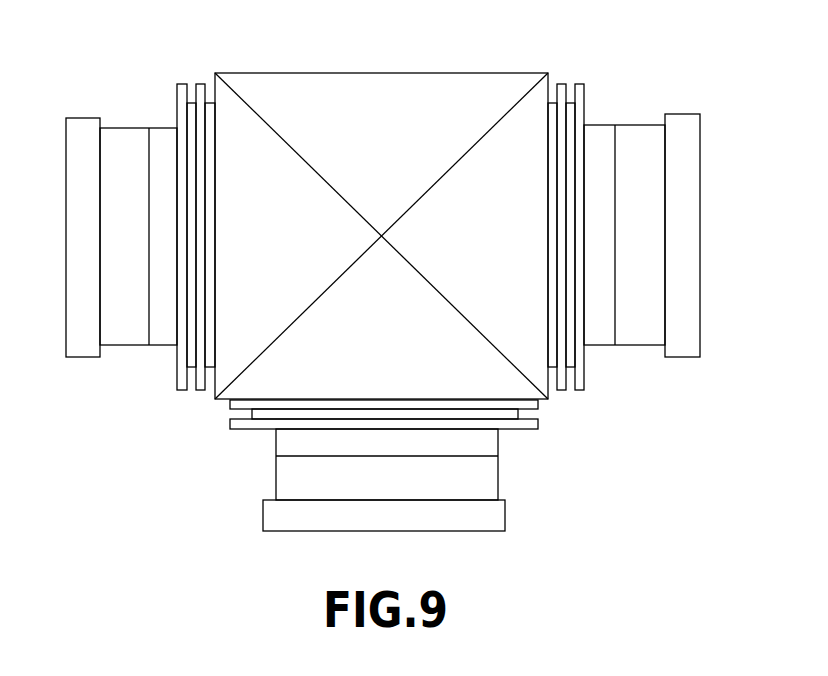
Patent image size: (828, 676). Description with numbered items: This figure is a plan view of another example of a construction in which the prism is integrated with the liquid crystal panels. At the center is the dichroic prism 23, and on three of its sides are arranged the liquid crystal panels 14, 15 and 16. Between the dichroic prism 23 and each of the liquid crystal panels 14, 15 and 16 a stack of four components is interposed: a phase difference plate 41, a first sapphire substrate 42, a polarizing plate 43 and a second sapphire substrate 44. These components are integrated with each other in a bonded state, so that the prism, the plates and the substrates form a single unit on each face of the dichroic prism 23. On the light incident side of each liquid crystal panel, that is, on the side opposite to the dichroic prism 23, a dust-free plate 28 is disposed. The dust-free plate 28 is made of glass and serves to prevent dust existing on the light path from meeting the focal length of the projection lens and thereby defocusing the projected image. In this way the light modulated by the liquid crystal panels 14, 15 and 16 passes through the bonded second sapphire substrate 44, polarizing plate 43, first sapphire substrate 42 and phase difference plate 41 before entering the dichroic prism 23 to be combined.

The dichroic prism 23 is at (407, 93).
The phase difference plate 41 is at (212, 121).
The first sapphire substrate 42 is at (200, 88).
The polarizing plate 43 is at (196, 357).
The second sapphire substrate 44 is at (178, 392).
The liquid crystal panel 14 is at (662, 115).
The liquid crystal panel 15 is at (502, 430).
The liquid crystal panel 16 is at (177, 351).
The dust-free plate 28 is at (84, 353).